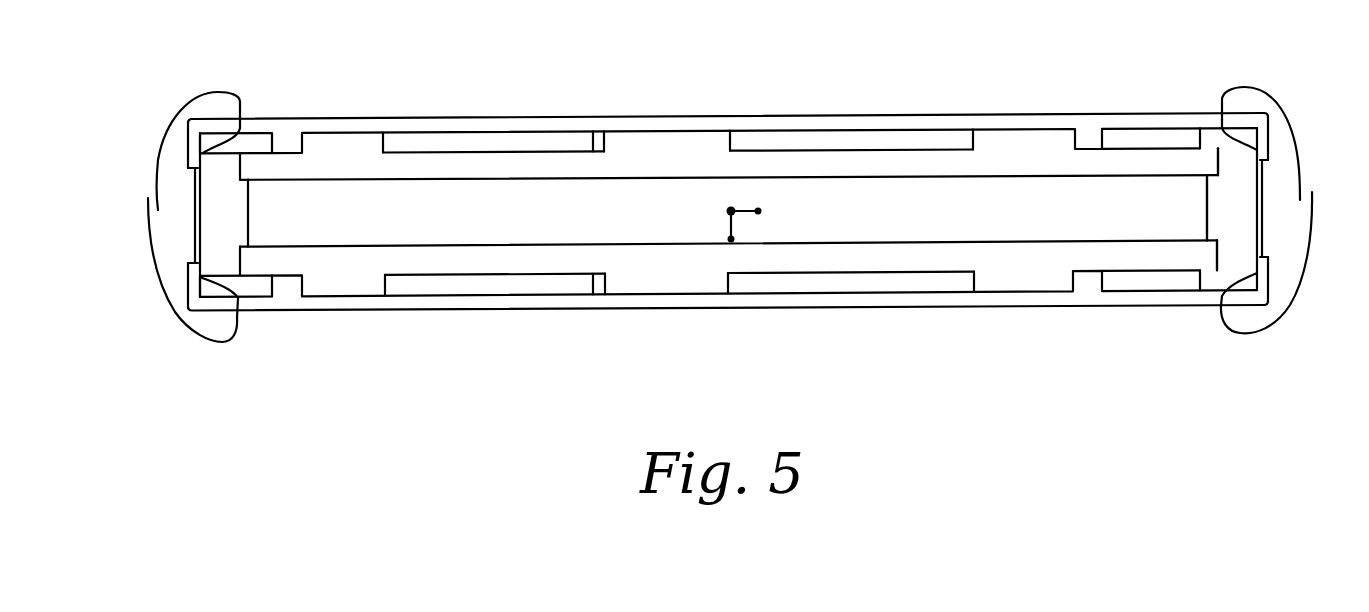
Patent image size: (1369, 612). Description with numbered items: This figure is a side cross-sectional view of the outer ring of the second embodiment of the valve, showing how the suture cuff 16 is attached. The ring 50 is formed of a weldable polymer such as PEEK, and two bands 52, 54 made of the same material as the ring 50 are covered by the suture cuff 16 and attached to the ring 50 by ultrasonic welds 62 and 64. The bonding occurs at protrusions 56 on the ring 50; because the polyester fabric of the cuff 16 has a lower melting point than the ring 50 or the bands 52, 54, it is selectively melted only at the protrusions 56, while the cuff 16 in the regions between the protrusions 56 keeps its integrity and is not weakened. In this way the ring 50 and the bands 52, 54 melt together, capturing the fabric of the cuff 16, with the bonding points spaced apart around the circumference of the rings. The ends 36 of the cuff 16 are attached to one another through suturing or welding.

The suture cuff 16 is at (165, 140).
The ends of cuff 36 is at (148, 203).
The ring 50 is at (1222, 202).
The band 52 is at (1240, 307).
The band 54 is at (1240, 112).
The protrusions 56 is at (995, 277).
The ultrasonic weld 62 is at (662, 128).
The ultrasonic weld 64 is at (648, 294).